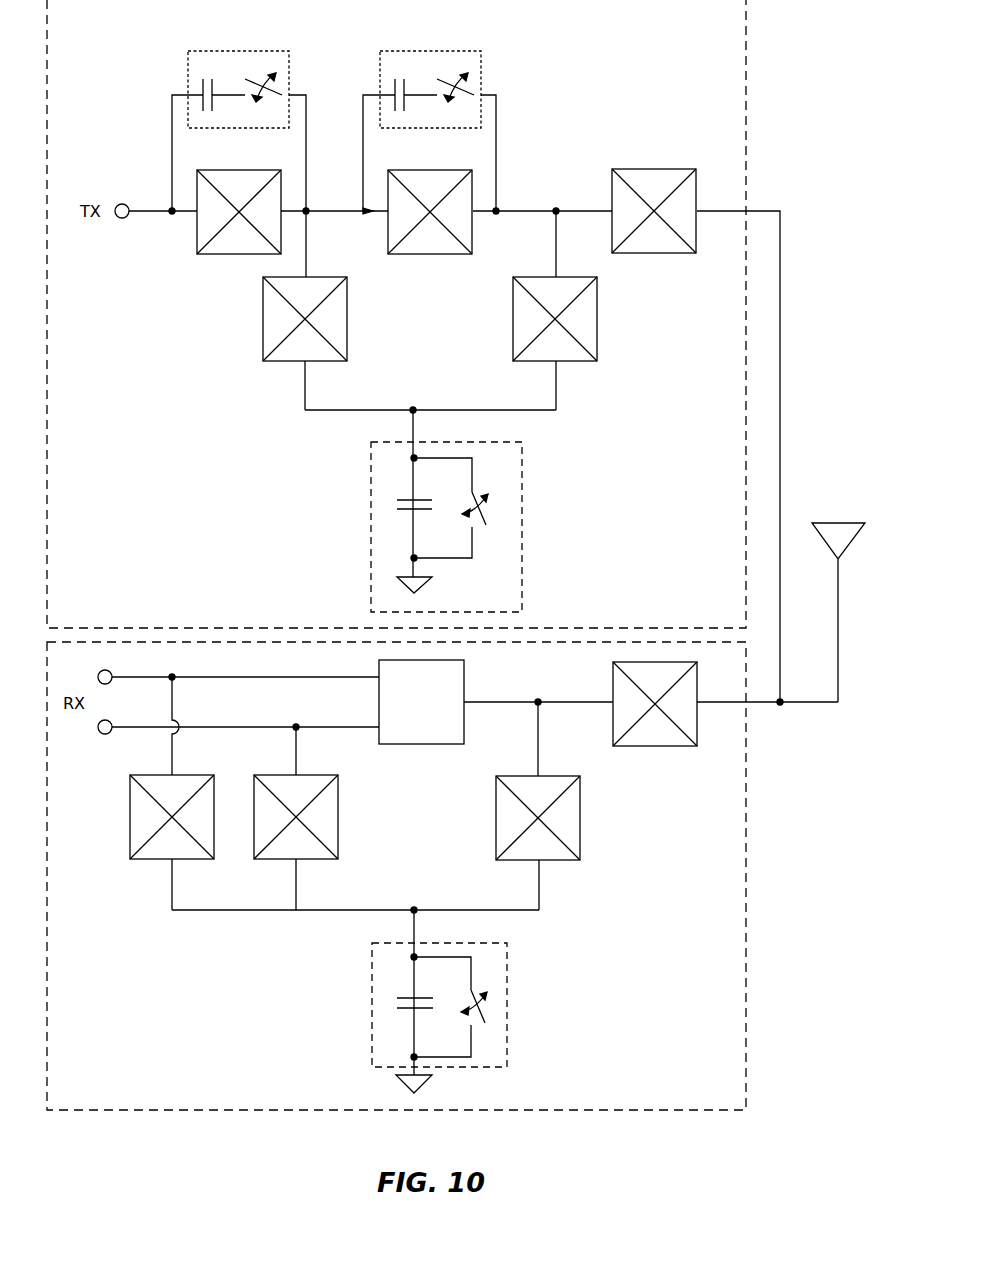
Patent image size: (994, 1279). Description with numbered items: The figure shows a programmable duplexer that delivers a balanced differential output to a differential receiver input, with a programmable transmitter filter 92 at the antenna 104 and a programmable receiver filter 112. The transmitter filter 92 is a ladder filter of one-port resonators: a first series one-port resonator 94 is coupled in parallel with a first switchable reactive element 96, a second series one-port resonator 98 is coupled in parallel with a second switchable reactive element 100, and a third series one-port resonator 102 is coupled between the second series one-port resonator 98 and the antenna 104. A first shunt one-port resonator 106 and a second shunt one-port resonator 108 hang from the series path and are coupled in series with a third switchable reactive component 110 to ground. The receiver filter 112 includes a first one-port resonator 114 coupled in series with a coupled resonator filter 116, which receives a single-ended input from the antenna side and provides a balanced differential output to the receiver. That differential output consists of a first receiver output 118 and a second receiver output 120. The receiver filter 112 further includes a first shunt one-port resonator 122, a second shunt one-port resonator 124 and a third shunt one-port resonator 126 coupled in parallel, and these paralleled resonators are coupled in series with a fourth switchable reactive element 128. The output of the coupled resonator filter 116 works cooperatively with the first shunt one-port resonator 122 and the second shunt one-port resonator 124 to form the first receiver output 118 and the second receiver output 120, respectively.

The programmable transmitter filter 92 is at (90, 599).
The first series one-port resonator 94 is at (213, 255).
The first switchable reactive element 96 is at (205, 51).
The second series one-port resonator 98 is at (449, 254).
The second switchable reactive element 100 is at (396, 51).
The third series one-port resonator 102 is at (667, 169).
The antenna 104 is at (846, 537).
The first shunt one-port resonator 106 is at (347, 310).
The second shunt one-port resonator 108 is at (597, 320).
The third switchable reactive component 110 is at (371, 460).
The programmable receiver filter 112 is at (94, 1080).
The first one-port resonator 114 is at (673, 746).
The coupled resonator filter 116 is at (408, 719).
The first receiver output 118 is at (148, 676).
The second receiver output 120 is at (147, 726).
The first shunt one-port resonator 122 is at (188, 860).
The second shunt one-port resonator 124 is at (312, 860).
The third shunt one-port resonator 126 is at (551, 860).
The fourth switchable reactive element 128 is at (505, 989).